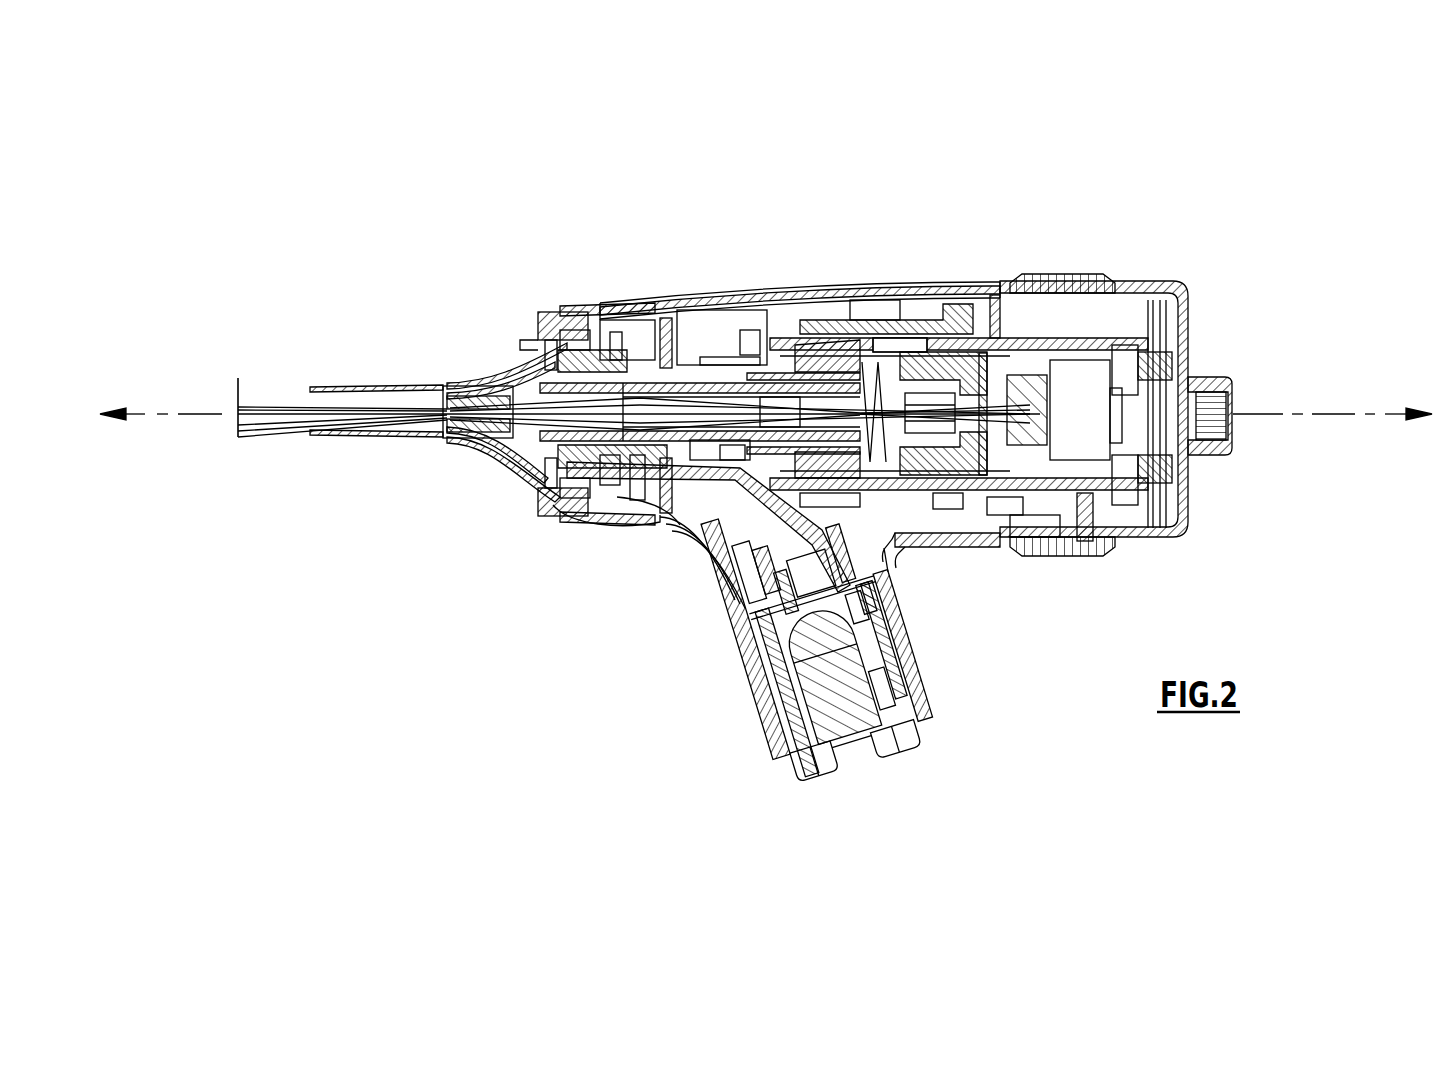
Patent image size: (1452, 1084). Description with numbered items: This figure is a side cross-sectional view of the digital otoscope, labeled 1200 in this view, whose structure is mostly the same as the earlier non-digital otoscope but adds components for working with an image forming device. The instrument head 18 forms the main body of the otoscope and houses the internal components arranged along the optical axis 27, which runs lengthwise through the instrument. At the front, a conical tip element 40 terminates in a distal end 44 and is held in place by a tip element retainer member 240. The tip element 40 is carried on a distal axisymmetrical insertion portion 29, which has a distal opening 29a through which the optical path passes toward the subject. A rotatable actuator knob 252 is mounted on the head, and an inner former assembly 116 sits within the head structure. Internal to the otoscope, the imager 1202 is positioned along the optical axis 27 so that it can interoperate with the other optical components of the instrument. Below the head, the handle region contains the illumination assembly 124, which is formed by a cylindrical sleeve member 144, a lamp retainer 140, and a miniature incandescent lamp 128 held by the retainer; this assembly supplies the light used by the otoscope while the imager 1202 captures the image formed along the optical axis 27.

The surgical laser system 1200 is at (316, 187).
The optical axis 27 is at (161, 414).
The distal end 44 is at (315, 388).
The tip element 40 is at (362, 388).
The distal opening 29a is at (430, 424).
The distal axisymmetrical insertion portion 29 is at (492, 448).
The tip element retainer member 240 is at (548, 326).
The rotatable actuator knob 252 is at (576, 312).
The inner former assembly 116 is at (720, 360).
The instrument head 18 is at (929, 280).
The imager 1202 is at (1032, 383).
The illumination assembly 124 is at (974, 716).
The cylindrical sleeve member 144 is at (745, 704).
The lamp retainer 140 is at (768, 745).
The miniature incandescent lamp 128 is at (857, 766).